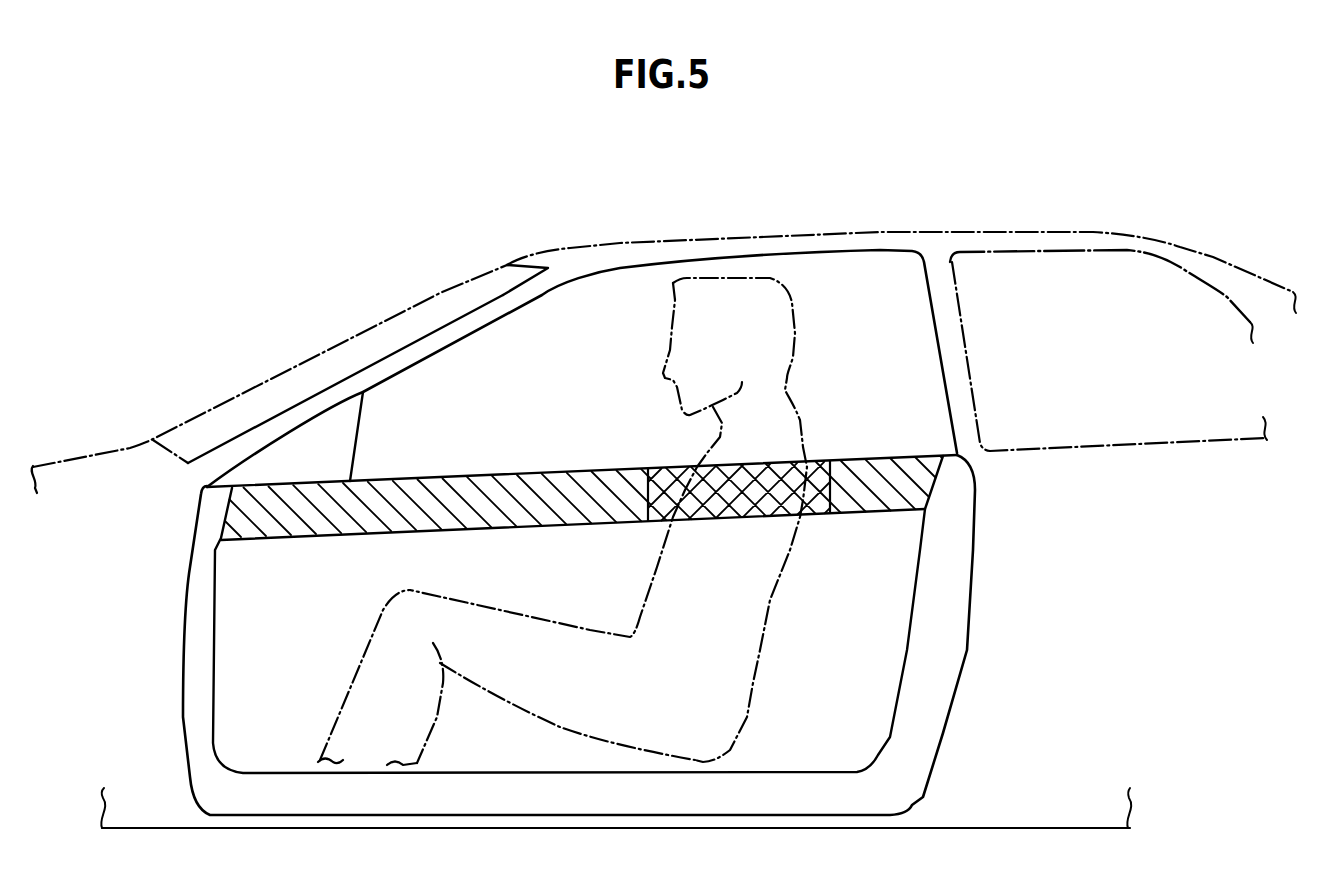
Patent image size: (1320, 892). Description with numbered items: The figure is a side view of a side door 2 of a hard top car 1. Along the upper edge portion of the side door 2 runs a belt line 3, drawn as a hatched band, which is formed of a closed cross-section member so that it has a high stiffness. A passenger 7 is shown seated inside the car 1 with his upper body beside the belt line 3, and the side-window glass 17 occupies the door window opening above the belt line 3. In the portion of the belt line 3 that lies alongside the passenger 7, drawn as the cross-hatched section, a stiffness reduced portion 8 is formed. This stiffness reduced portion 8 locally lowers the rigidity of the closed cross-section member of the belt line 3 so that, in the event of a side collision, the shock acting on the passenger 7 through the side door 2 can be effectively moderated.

The hard top car 1 is at (1187, 192).
The side door 2 is at (957, 553).
The belt line 3 is at (857, 477).
The passenger 7 is at (788, 406).
The stiffness reduced portion 8 is at (760, 503).
The side-window glass 17 is at (556, 427).